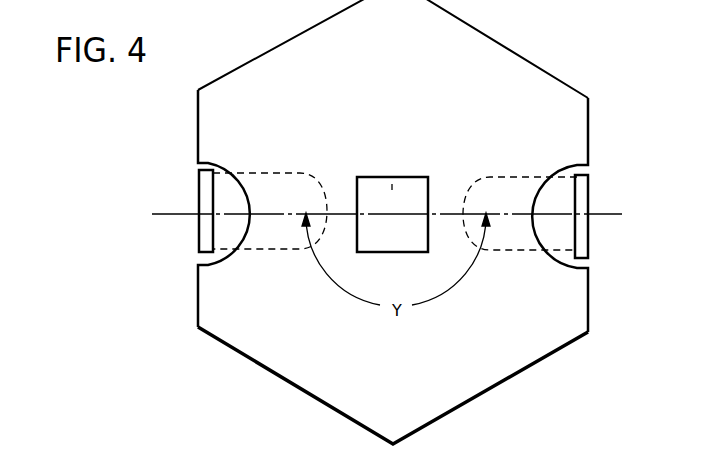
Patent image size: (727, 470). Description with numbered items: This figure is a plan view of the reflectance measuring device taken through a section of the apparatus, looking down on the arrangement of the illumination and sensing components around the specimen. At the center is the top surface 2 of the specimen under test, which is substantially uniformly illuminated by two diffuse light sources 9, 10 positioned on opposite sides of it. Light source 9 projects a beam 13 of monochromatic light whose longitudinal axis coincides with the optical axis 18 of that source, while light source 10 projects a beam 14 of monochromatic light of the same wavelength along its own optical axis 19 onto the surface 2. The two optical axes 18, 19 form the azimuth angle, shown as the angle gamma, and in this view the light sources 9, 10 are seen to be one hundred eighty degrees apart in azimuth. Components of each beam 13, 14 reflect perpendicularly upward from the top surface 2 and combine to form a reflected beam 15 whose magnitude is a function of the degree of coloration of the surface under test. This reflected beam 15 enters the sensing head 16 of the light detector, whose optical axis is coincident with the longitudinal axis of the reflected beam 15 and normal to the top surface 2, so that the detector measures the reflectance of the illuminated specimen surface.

The top surface 2 is at (385, 241).
The diffuse light source 9 is at (590, 250).
The diffuse light source 10 is at (197, 237).
The beam 13 is at (453, 192).
The beam 14 is at (334, 192).
The reflected beam 15 is at (407, 190).
The sensing head 16 is at (375, 177).
The optical axis 18 is at (615, 212).
The optical axis 19 is at (153, 212).